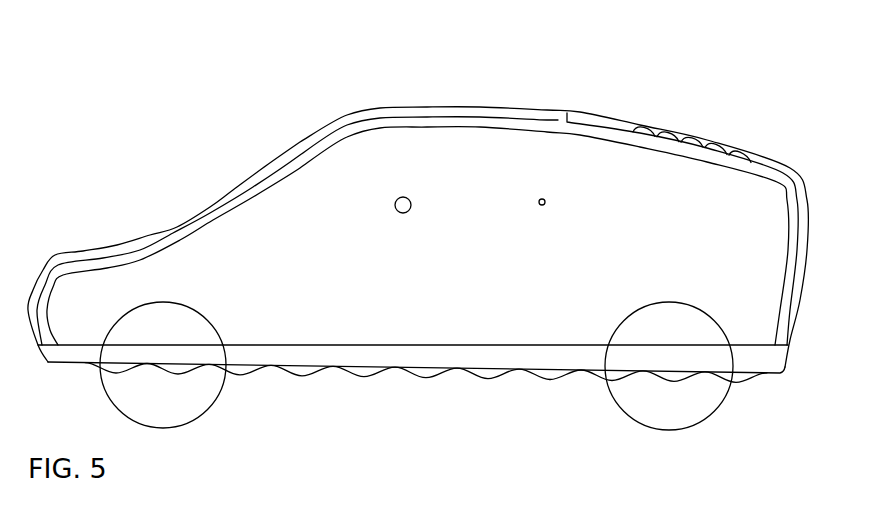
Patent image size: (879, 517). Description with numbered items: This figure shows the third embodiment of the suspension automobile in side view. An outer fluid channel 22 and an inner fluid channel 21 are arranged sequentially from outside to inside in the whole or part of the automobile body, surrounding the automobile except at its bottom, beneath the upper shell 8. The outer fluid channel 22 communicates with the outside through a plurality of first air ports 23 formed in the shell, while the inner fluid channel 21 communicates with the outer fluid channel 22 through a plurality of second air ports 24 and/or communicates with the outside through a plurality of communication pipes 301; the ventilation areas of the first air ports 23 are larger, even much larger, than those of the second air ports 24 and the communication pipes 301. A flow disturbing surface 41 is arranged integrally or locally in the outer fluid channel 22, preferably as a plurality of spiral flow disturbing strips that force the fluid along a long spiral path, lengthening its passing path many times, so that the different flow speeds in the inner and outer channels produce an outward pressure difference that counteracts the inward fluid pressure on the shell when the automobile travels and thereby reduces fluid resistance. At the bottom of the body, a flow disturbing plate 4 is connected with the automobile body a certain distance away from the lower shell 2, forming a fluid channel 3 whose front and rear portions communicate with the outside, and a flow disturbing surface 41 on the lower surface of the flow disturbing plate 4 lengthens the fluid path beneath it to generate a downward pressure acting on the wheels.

The lower shell 2 is at (398, 345).
The fluid channel 3 is at (303, 352).
The flow disturbing plate 4 is at (463, 367).
The upper shell 8 is at (498, 107).
The inner fluid channel 21 is at (310, 157).
The outer fluid channel 22 is at (368, 115).
The first air port 23 is at (403, 197).
The second air port 24 is at (542, 199).
The flow disturbing surface 41 is at (565, 375).
The communication pipe 301 is at (572, 115).